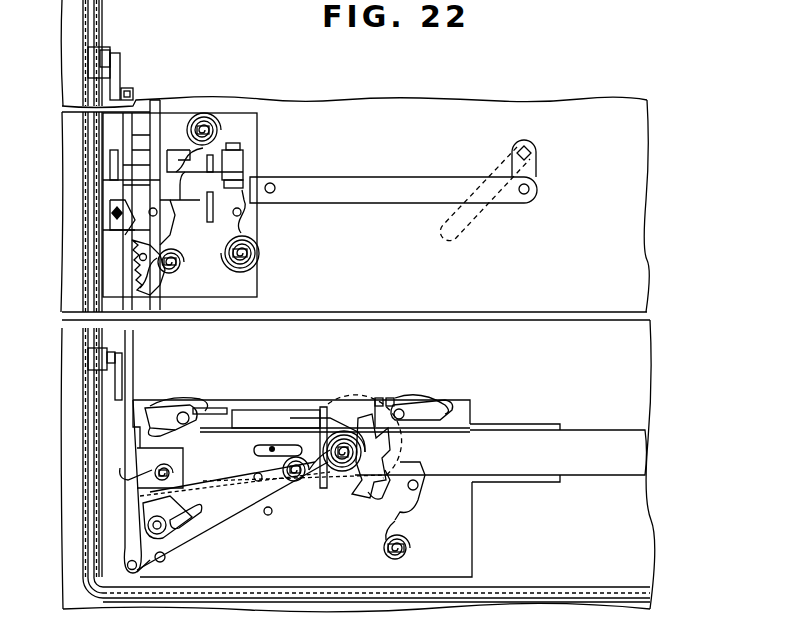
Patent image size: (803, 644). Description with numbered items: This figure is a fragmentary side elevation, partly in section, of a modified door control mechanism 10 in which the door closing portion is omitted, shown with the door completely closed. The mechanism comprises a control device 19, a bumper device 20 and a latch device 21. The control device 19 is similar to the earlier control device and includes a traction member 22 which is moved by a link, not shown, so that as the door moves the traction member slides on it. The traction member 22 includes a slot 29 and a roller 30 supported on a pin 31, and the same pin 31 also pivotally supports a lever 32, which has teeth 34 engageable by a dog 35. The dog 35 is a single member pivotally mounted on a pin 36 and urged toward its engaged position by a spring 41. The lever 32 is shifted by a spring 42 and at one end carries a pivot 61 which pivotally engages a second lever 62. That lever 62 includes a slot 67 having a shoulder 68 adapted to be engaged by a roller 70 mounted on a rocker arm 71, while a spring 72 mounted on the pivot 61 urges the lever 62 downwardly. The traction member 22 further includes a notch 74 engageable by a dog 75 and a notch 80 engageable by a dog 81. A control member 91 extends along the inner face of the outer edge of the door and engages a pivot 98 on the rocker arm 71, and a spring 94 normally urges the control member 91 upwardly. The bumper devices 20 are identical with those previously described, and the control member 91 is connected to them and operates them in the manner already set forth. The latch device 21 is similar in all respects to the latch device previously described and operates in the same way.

The door control mechanism 10 is at (601, 112).
The control device 19 is at (475, 400).
The bumper device 20 is at (92, 60).
The latch device 21 is at (258, 109).
The traction member 22 is at (590, 437).
The slot 29 is at (273, 447).
The roller 30 is at (344, 410).
The pin 31 is at (342, 468).
The lever 32 is at (377, 398).
The teeth 34 is at (368, 494).
The dog 35 is at (405, 507).
The pin 36 is at (418, 486).
The spring 41 is at (406, 549).
The spring 42 is at (361, 446).
The pivot 61 is at (310, 481).
The second lever 62 is at (247, 509).
The slot 67 is at (159, 506).
The shoulder 68 is at (166, 532).
The roller 70 is at (166, 558).
The rocker arm 71 is at (168, 568).
The spring 72 is at (256, 473).
The notch 74 is at (161, 431).
The dog 75 is at (164, 409).
The notch 80 is at (325, 432).
The dog 81 is at (431, 415).
The control member 91 is at (133, 96).
The spring 94 is at (132, 480).
The pivot 98 is at (137, 573).